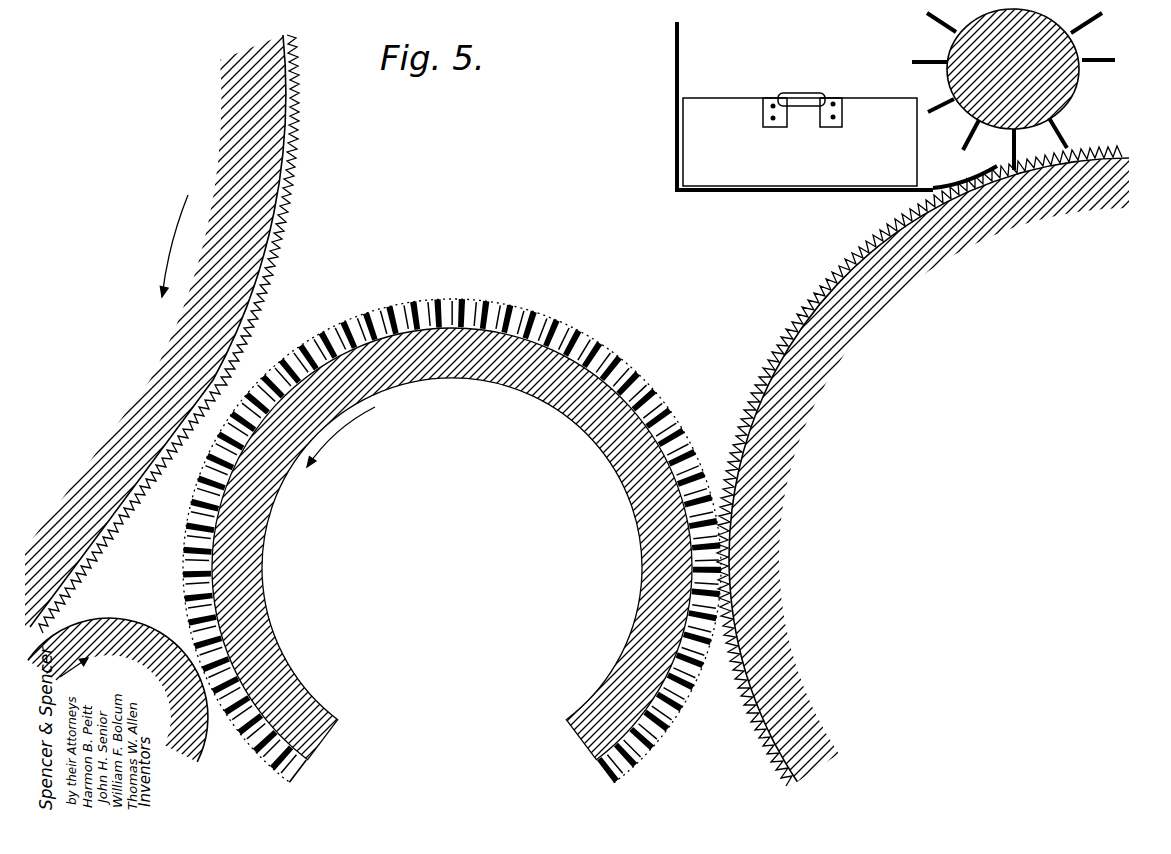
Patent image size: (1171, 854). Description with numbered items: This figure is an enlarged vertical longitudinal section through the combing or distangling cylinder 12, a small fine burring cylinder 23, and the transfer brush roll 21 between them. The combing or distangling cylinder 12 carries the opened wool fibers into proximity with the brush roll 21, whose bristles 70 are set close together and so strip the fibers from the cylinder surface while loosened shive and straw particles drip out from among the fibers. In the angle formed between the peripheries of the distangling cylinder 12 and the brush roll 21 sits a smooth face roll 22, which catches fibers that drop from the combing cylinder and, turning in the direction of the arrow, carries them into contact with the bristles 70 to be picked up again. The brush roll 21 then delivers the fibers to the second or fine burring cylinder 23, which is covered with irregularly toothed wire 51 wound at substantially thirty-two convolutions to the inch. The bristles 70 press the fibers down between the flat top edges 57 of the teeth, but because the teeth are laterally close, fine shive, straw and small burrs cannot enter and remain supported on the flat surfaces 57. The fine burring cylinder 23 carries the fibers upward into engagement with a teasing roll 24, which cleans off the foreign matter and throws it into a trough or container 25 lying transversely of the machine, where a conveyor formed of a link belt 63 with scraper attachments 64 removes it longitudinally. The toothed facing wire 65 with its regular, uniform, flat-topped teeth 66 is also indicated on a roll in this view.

The combing or distangling cylinder 12 is at (253, 143).
The brush roll 21 is at (377, 370).
The smooth face roll 22 is at (110, 643).
The second or fine burring cylinder 23 is at (787, 399).
The teasing roll 24 is at (1087, 50).
The trough or container 25 is at (677, 73).
The irregularly toothed wire 51 is at (810, 310).
The flat top edges of the teeth 57 is at (803, 323).
The link belt 63 is at (800, 100).
The scraper attachments 64 is at (868, 94).
The facing wire 65 is at (277, 205).
The regular uniform teeth 66 is at (273, 255).
The bristles 70 is at (623, 357).